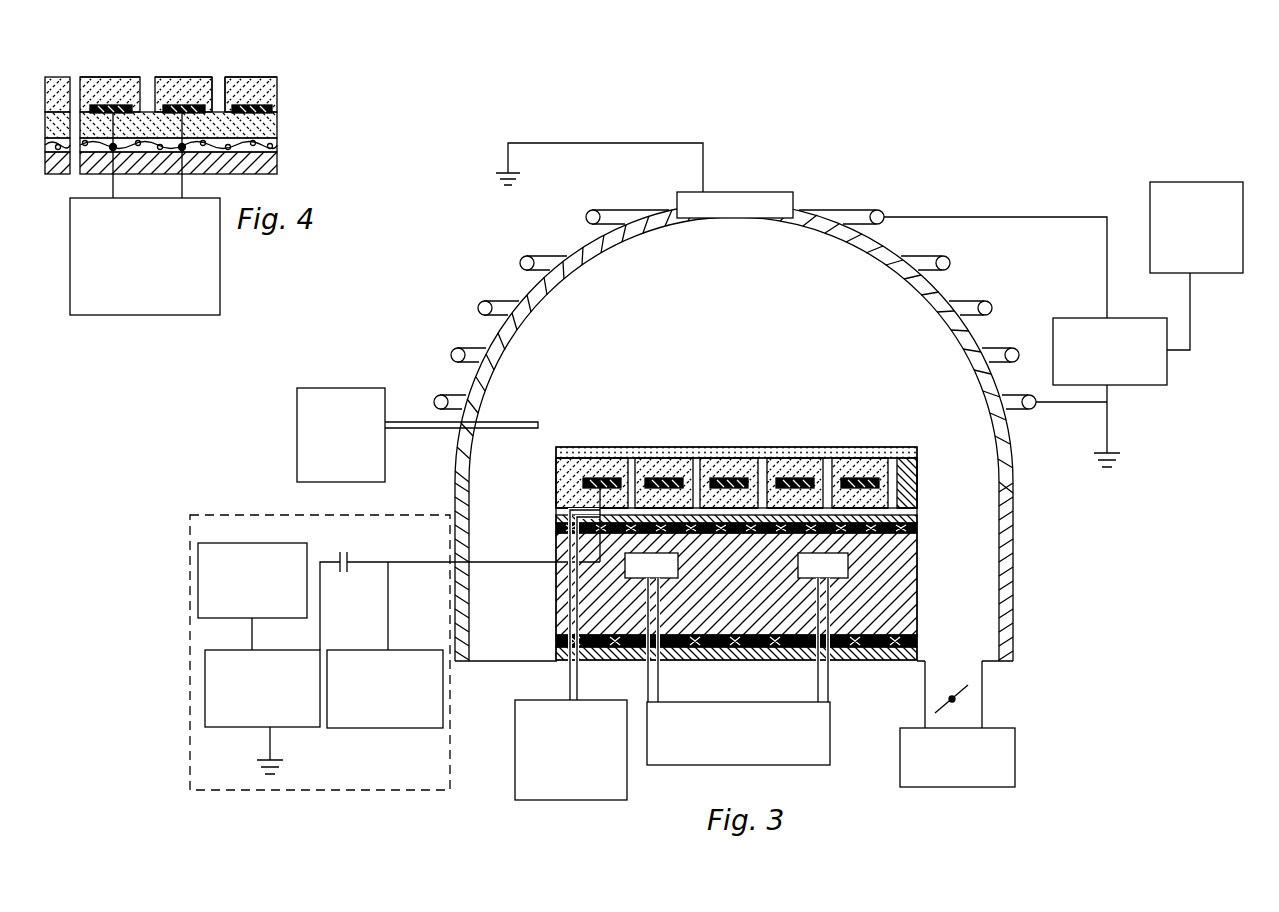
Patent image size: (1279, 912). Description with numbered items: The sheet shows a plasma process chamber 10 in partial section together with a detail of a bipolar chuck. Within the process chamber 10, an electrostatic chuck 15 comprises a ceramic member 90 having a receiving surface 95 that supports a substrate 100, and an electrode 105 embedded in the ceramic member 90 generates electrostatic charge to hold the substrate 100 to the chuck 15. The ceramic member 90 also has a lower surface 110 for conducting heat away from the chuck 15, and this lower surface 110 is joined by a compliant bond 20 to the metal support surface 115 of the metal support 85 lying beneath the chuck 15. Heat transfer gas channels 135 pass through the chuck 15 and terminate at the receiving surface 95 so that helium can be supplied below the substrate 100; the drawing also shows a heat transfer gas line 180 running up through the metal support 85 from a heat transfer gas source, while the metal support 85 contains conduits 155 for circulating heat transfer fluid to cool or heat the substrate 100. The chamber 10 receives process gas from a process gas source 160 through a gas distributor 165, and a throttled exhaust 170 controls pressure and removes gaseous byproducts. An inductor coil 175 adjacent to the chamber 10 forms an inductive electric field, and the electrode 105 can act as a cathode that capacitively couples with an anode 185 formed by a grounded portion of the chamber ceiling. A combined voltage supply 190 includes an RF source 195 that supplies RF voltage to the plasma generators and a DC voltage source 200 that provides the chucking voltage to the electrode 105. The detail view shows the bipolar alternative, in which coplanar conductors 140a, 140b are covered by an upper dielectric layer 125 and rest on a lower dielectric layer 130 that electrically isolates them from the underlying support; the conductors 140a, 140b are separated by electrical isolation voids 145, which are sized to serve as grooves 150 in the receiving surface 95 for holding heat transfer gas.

In FIG. 3, the process chamber 10 is at (774, 156).
In FIG. 3, the electrostatic chuck 15 is at (552, 487).
In FIG. 3, the compliant bond 20 is at (552, 530).
In FIG. 3, the metal support 85 is at (756, 587).
In FIG. 3, the ceramic member 90 is at (918, 483).
In FIG. 3, the receiving surface 95 is at (779, 470).
In FIG. 3, the substrate 100 is at (878, 450).
In FIG. 3, the electrode 105 is at (665, 470).
In FIG. 3, the lower surface 110 is at (888, 516).
In FIG. 3, the metal support surface 115 is at (882, 536).
In FIG. 3, the heat transfer gas channels 135 is at (912, 468).
In FIG. 3, the conduits 155 is at (848, 565).
In FIG. 3, the process gas source 160 is at (363, 388).
In FIG. 3, the gas distributor 165 is at (522, 421).
In FIG. 3, the throttled exhaust 170 is at (1000, 720).
In FIG. 3, the inductor coil 175 is at (972, 300).
In FIG. 3, the heat transfer gas channel 180 is at (602, 477).
In FIG. 3, the anode 185 is at (740, 219).
In FIG. 3, the combined voltage supply 190 is at (220, 511).
In FIG. 3, the RF source 195 is at (1172, 176).
In FIG. 3, the DC voltage source 200 is at (360, 729).
In FIG. 4, the upper dielectric layer 125 is at (56, 77).
In FIG. 4, the lower dielectric layer 130 is at (278, 122).
In FIG. 4, the bipolar electrode conductor 140a is at (105, 104).
In FIG. 4, the bipolar electrode conductor 140b is at (185, 104).
In FIG. 4, the electrical isolation voids 145 is at (221, 70).
In FIG. 4, the grooves 150 is at (217, 88).